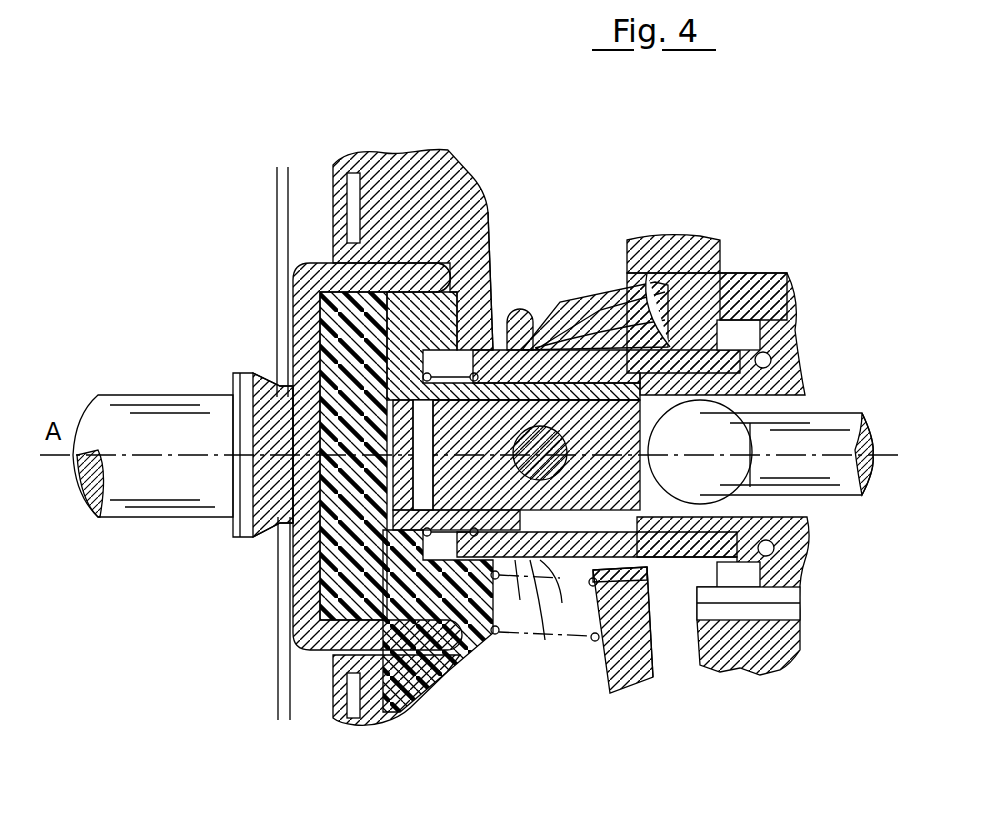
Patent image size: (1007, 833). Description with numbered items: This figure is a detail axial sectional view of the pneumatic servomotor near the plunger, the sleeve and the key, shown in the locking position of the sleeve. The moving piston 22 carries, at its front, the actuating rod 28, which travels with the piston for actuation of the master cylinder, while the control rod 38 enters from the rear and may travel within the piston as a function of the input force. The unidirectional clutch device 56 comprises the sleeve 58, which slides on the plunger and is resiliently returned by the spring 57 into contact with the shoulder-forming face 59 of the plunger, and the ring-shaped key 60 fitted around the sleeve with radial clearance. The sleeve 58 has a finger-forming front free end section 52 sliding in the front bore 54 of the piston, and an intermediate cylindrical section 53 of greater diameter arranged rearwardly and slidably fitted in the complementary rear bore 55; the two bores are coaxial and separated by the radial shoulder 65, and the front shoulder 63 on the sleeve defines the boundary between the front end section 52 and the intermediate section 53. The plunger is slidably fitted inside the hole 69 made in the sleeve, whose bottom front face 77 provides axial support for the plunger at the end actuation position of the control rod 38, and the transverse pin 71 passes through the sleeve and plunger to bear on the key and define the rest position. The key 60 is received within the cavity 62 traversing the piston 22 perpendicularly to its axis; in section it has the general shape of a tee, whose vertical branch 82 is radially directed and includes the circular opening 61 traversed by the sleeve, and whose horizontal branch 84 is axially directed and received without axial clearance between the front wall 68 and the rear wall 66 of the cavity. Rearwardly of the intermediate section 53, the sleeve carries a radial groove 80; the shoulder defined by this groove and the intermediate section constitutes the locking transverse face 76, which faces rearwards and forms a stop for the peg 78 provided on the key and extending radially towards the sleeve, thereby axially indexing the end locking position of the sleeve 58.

The moving piston 22 is at (423, 170).
The actuating rod 28 is at (140, 507).
The control rod 38 is at (837, 427).
The finger-forming front free end section 52 is at (280, 387).
The intermediate cylindrical section 53 is at (513, 600).
The bore 54 is at (345, 335).
The rear bore 55 is at (492, 270).
The unidirectional clutch device 56 is at (525, 292).
The spring 57 is at (307, 617).
The sleeve 58 is at (560, 603).
The shoulder-forming face 59 is at (797, 340).
The key 60 is at (620, 680).
The circular opening 61 is at (690, 250).
The cavity 62 is at (537, 620).
The front shoulder 63 is at (520, 600).
The radial shoulder 65 is at (446, 240).
The rear wall 66 is at (727, 277).
The front wall 68 is at (493, 637).
The hole 69 is at (800, 612).
The transverse pin 71 is at (640, 478).
The transverse face 76 is at (557, 330).
The bottom front face 77 is at (425, 480).
The peg 78 is at (533, 347).
The radial groove 80 is at (600, 582).
The vertical branch 82 is at (640, 667).
The horizontal branch 84 is at (600, 340).